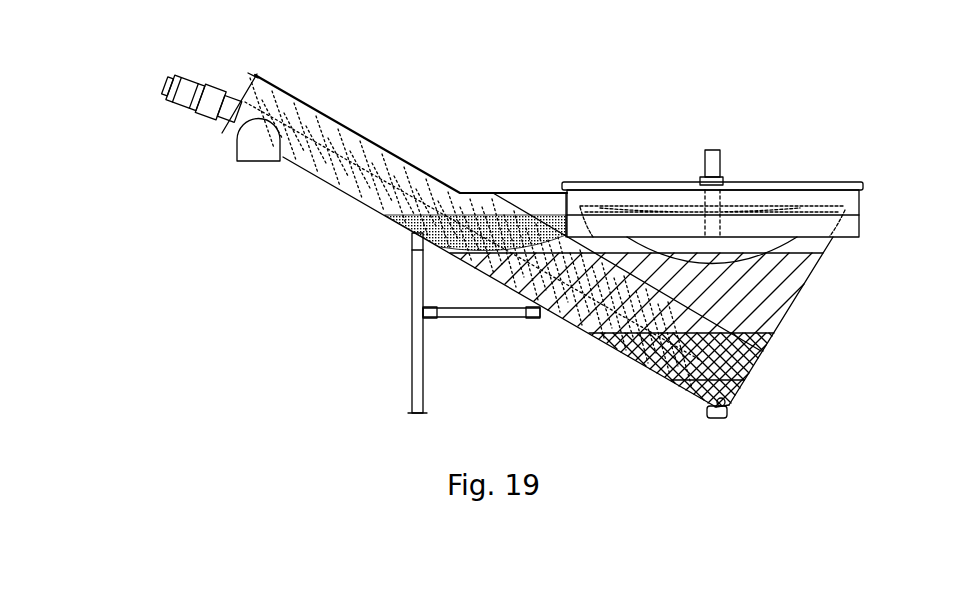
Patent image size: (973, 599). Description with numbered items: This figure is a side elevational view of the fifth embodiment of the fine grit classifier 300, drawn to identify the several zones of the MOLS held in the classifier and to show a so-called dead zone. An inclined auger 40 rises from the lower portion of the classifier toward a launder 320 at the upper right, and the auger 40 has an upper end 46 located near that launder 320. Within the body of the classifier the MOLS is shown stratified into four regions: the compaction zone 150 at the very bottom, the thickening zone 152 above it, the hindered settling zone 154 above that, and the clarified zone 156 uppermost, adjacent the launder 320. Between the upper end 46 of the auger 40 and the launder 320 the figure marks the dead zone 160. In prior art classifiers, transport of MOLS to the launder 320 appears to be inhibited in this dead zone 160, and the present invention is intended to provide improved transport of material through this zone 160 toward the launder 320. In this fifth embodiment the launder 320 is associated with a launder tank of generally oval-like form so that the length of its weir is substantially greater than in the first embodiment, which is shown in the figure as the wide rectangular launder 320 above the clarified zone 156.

The fine grit classifier 300 is at (233, 212).
The auger 40 is at (357, 178).
The upper end of the auger 46 is at (298, 143).
The dead zone 160 is at (477, 215).
The launder 320 is at (765, 207).
The clarified zone 156 is at (823, 247).
The hindered settling zone 154 is at (800, 297).
The thickening zone 152 is at (761, 354).
The compaction zone 150 is at (744, 391).